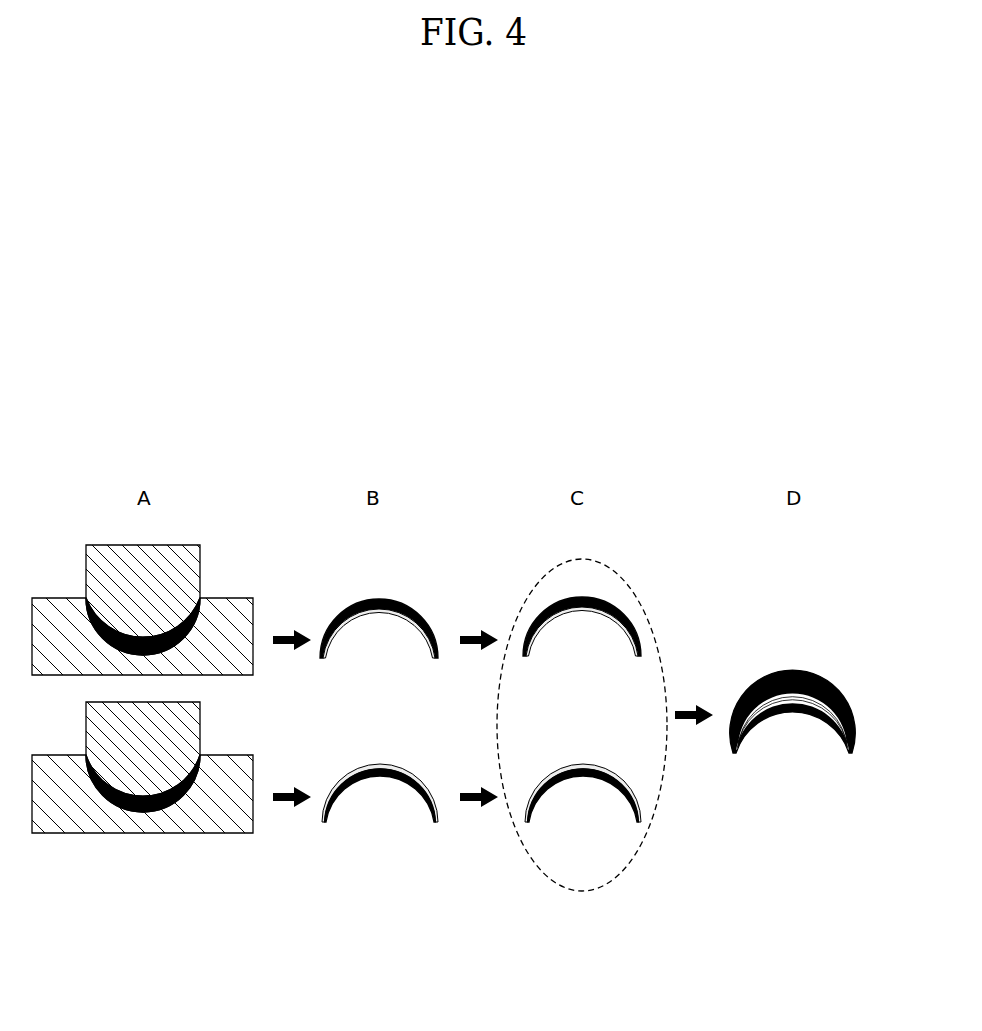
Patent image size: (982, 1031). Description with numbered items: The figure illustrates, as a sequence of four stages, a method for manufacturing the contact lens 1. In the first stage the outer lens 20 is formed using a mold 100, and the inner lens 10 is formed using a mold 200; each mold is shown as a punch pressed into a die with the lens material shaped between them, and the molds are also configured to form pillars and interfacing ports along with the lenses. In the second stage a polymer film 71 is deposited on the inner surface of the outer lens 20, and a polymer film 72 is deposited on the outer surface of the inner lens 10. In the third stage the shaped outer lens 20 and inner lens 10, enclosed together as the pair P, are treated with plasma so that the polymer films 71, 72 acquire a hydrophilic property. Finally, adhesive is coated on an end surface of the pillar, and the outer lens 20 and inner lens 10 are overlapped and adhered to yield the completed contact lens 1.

The contact lens 1 is at (848, 670).
The inner lens 10 is at (142, 798).
The outer lens 20 is at (148, 643).
The polymer film 71 is at (372, 612).
The polymer film 72 is at (396, 760).
The mold 100 is at (47, 612).
The mold 200 is at (192, 710).
The laminated lens pair P is at (647, 618).